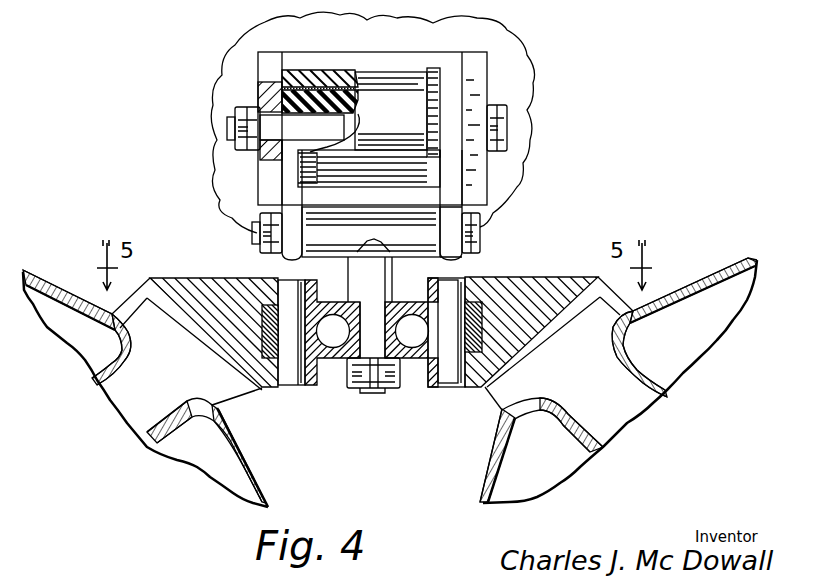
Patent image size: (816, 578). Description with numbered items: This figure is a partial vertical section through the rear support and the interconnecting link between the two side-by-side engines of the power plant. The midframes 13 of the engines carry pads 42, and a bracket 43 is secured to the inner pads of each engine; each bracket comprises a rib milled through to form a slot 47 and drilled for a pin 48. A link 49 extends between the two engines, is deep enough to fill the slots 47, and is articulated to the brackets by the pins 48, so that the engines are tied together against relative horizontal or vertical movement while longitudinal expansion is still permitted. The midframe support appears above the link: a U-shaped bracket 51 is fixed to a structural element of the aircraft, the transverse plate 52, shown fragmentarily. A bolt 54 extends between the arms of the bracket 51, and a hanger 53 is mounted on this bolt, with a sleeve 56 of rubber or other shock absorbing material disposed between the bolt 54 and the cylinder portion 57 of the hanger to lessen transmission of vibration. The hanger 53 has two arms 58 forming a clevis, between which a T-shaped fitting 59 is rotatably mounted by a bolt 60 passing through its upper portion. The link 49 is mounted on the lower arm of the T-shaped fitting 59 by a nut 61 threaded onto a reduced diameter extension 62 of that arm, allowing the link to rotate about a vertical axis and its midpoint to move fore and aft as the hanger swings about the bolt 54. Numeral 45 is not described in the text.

The midframe 13 is at (33, 270).
The pad 42 is at (235, 410).
The bracket 43 is at (190, 305).
The bracket 45 is at (532, 276).
The slot 47 is at (267, 337).
The pin 48 is at (290, 373).
The link 49 is at (333, 358).
The U-shaped bracket 51 is at (480, 72).
The transverse plate 52 is at (272, 40).
The hanger 53 is at (292, 178).
The bolt 54 is at (227, 130).
The sleeve 56 is at (287, 100).
The cylinder portion 57 is at (328, 78).
The arm 58 is at (288, 266).
The T-shaped fitting 59 is at (357, 290).
The bolt 60 is at (482, 228).
The nut 61 is at (378, 390).
The reduced diameter extension 62 is at (402, 358).